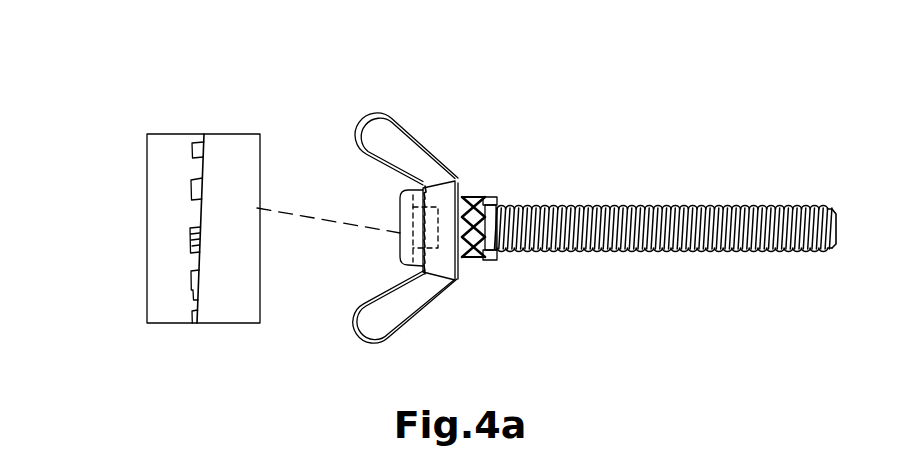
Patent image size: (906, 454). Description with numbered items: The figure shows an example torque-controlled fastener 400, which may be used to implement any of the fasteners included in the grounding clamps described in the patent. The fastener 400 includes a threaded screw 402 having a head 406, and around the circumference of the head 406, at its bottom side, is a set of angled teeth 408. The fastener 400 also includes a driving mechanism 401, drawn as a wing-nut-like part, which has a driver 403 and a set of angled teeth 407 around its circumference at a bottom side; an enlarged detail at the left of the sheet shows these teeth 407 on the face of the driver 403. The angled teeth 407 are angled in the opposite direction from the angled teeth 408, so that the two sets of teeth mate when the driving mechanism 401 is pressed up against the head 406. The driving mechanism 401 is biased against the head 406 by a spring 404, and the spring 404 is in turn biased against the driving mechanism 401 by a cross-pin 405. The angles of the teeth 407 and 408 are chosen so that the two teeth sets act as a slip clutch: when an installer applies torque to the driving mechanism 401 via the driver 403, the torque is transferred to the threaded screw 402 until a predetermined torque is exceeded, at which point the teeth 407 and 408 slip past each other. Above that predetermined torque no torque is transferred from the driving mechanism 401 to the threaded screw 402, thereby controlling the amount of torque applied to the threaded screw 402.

The fastener 400 is at (435, 192).
The driving mechanism 401 is at (463, 200).
The threaded screw 402 is at (652, 207).
The driver 403 is at (417, 130).
The spring 404 is at (477, 258).
The cross-pin 405 is at (497, 253).
The head 406 is at (172, 262).
The angled teeth 407 is at (202, 173).
The angled teeth 408 is at (197, 220).